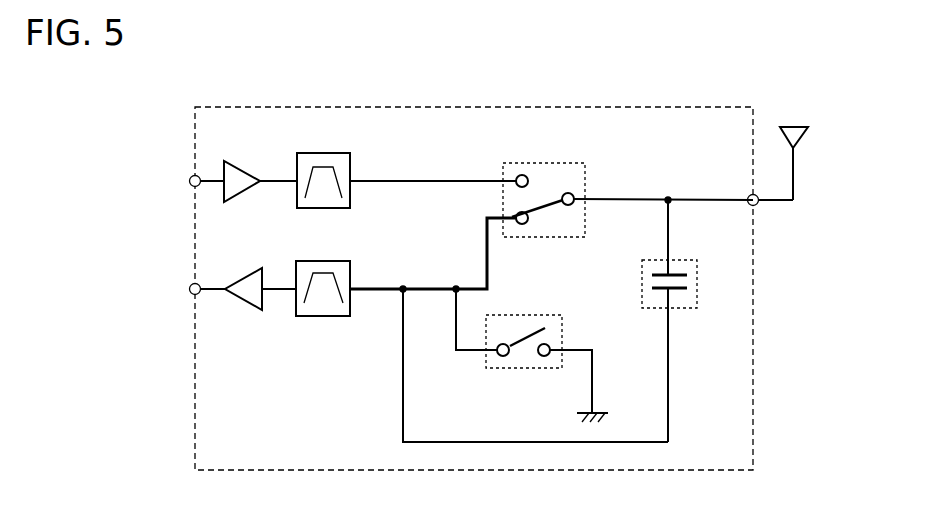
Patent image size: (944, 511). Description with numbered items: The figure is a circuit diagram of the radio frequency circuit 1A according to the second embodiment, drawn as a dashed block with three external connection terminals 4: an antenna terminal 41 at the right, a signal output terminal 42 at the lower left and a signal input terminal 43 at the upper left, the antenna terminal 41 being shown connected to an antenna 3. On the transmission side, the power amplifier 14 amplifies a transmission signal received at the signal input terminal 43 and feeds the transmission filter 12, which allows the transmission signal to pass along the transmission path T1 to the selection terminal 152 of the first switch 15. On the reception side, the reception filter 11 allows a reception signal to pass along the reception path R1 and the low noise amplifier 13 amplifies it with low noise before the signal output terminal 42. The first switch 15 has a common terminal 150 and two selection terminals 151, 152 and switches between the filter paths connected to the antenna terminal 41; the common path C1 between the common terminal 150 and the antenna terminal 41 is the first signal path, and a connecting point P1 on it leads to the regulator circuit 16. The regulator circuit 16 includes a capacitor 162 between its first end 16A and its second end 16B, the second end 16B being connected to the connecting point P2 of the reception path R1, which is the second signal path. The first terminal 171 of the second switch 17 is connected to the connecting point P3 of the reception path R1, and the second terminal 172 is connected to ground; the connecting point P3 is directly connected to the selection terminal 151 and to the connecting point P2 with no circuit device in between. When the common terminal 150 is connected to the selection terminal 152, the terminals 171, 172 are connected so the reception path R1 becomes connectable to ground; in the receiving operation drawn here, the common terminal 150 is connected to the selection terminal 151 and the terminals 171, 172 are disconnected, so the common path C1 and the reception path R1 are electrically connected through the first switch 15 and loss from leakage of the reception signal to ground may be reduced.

The radio frequency circuit 1A is at (727, 107).
The antenna 3 is at (811, 134).
The external connection terminals 4 is at (464, 235).
The antenna terminal 41 is at (758, 205).
The signal output terminal 42 is at (188, 289).
The signal input terminal 43 is at (188, 181).
The reception filter 11 is at (322, 318).
The transmission filter 12 is at (328, 162).
The low noise amplifier 13 is at (247, 297).
The power amplifier 14 is at (237, 172).
The first switch 15 is at (572, 205).
The common terminal 150 is at (575, 203).
The selection terminal 151 is at (522, 225).
The selection terminal 152 is at (521, 175).
The regulator circuit 16 is at (666, 321).
The first electrode of capacitor 16A is at (670, 262).
The second end 16B is at (671, 306).
The capacitor 162 is at (688, 281).
The second switch 17 is at (532, 355).
The first terminal 171 is at (503, 357).
The second terminal 172 is at (545, 357).
The transmission path T1 is at (424, 177).
The reception path R1 is at (376, 291).
The common path C1 is at (624, 198).
The node P1 is at (670, 198).
The connecting point P2 is at (403, 287).
The connecting point P3 is at (456, 287).